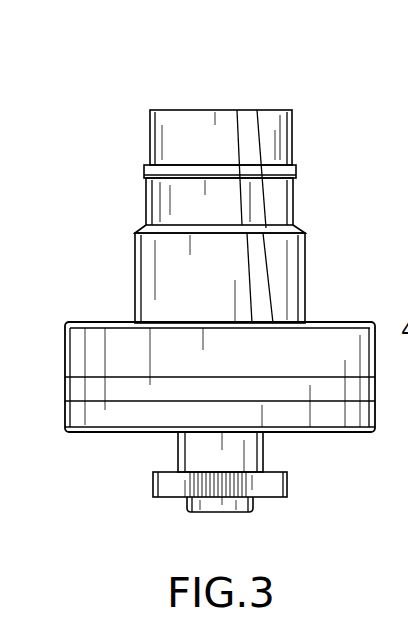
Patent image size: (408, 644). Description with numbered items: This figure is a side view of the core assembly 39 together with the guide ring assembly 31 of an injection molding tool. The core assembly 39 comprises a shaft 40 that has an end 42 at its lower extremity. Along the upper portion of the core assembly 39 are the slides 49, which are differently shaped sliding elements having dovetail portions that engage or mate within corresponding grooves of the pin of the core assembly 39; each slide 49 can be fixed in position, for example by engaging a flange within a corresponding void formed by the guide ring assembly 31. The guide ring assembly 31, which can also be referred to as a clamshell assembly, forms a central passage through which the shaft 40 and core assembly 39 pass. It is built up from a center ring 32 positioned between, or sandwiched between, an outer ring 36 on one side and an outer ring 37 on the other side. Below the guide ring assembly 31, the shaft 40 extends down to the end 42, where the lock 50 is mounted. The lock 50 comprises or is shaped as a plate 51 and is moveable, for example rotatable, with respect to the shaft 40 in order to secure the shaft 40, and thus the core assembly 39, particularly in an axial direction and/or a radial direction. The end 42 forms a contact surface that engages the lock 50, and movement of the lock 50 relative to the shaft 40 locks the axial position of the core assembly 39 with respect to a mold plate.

The guide ring assembly 31 is at (348, 295).
The core assembly 39 is at (288, 90).
The slides 49 is at (282, 137).
The center ring 32 is at (65, 385).
The outer ring 36 is at (66, 342).
The outer ring 37 is at (66, 420).
The shaft 40 is at (193, 448).
The lock 50 is at (297, 487).
The plate 51 is at (263, 487).
The end 42 is at (208, 503).